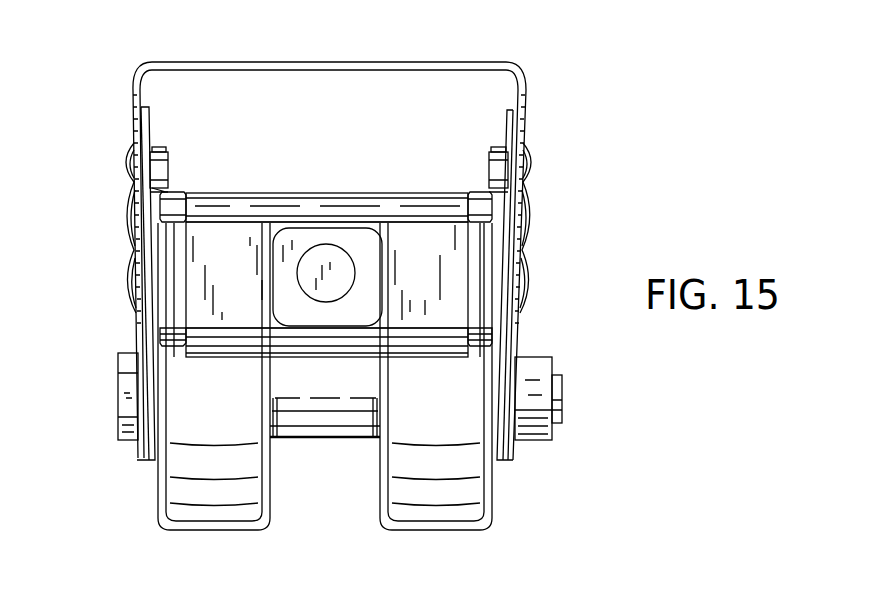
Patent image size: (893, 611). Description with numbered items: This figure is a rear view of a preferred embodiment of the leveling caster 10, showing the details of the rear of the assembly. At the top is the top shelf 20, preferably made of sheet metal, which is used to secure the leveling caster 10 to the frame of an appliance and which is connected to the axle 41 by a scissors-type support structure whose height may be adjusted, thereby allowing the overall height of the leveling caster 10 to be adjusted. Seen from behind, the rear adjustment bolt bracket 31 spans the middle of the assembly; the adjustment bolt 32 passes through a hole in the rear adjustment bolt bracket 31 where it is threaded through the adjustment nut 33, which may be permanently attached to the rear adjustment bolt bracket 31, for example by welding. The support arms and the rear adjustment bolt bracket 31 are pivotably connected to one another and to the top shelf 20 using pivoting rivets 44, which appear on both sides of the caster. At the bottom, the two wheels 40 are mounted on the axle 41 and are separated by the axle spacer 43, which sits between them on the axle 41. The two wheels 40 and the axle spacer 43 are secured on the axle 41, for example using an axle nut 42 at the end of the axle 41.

The leveling caster 10 is at (114, 65).
The top shelf 20 is at (467, 66).
The rear adjustment bolt bracket 31 is at (220, 230).
The adjustment bolt 32 is at (330, 252).
The adjustment nut 33 is at (293, 233).
The wheel 40 is at (177, 502).
The axle 41 is at (123, 402).
The axle nut 42 is at (536, 374).
The axle spacer 43 is at (320, 420).
The pivoting rivet 44 is at (133, 268).